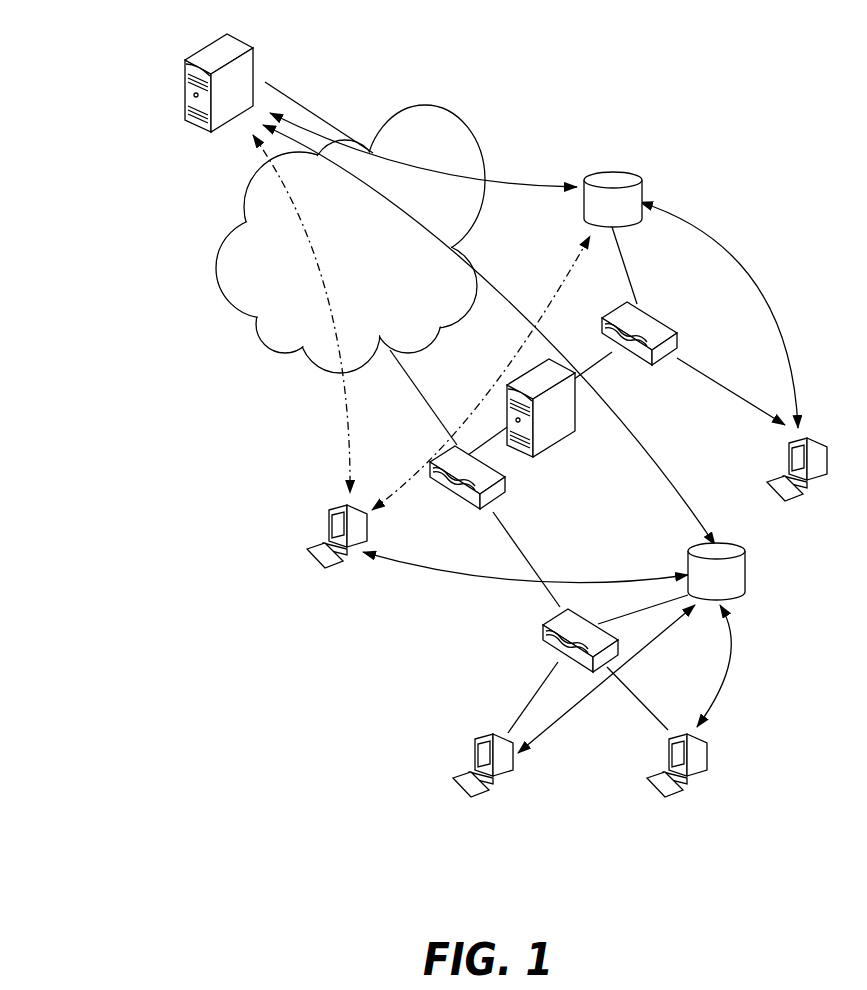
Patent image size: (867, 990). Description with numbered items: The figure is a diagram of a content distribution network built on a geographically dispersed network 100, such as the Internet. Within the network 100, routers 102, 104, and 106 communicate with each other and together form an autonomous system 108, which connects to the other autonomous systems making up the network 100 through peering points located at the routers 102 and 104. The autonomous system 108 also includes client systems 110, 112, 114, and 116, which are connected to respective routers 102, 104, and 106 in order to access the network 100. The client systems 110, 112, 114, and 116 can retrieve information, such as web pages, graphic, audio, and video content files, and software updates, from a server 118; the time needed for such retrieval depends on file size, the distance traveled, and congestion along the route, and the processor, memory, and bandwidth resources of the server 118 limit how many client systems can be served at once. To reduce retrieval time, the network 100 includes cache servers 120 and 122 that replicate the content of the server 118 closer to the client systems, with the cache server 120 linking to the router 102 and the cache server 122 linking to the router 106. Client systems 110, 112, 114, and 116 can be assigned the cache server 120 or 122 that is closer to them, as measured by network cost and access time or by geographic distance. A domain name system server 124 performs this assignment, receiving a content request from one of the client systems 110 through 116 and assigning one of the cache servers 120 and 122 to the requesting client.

The network 100 is at (160, 422).
The router 102 is at (652, 314).
The router 104 is at (480, 508).
The router 106 is at (543, 632).
The autonomous system 108 is at (687, 137).
The client system 110 is at (790, 438).
The client system 112 is at (330, 507).
The client system 114 is at (478, 735).
The client system 116 is at (672, 733).
The server 118 is at (222, 45).
The cache server 120 is at (585, 221).
The cache server 122 is at (747, 572).
The domain name system (DNS) server 124 is at (543, 443).